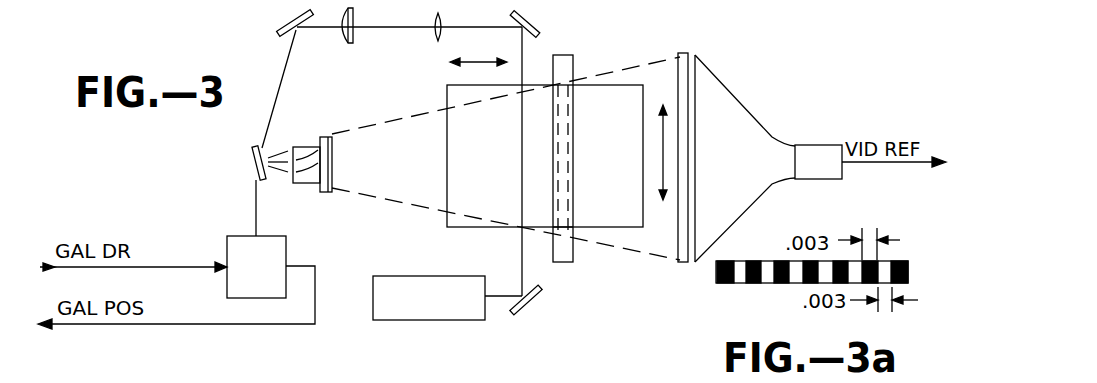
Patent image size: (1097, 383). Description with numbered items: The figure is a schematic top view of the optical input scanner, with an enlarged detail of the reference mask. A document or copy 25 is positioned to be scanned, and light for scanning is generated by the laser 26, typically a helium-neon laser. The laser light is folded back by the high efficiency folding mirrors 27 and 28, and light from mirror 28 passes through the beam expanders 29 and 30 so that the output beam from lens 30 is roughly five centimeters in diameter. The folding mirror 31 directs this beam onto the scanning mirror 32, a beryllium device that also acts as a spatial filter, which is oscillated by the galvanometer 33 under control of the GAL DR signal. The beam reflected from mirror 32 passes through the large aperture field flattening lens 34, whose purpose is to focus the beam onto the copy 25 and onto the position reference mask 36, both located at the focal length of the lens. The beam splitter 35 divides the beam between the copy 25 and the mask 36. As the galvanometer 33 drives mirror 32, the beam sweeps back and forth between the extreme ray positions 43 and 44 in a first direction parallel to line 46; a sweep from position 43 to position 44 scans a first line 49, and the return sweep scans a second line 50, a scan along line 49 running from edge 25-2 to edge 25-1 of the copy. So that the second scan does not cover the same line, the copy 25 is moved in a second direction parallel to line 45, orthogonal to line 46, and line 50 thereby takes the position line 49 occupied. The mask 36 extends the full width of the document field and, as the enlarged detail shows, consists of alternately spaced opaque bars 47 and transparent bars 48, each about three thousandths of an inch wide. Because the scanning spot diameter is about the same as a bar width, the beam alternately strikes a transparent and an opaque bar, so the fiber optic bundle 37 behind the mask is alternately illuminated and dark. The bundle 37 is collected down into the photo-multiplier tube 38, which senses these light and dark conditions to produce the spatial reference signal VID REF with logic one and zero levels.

In FIG. 3, the copy 25 is at (603, 169).
In FIG. 3, the edge of copy 25-1 is at (530, 84).
In FIG. 3, the edge of copy 25-2 is at (583, 230).
In FIG. 3, the laser 26 is at (428, 276).
In FIG. 3, the folding mirror 27 is at (532, 303).
In FIG. 3, the folding mirror 28 is at (538, 25).
In FIG. 3, the beam expander 29 is at (437, 41).
In FIG. 3, the beam expander lens 30 is at (349, 43).
In FIG. 3, the folding mirror 31 is at (278, 33).
In FIG. 3, the scanning mirror 32 is at (252, 160).
In FIG. 3, the galvanometer 33 is at (237, 236).
In FIG. 3, the field flattening lens 34 is at (306, 146).
In FIG. 3, the beam splitter 35 is at (575, 70).
In FIG. 3, the position reference mask 36 is at (686, 52).
In FIG. 3, the fiber optic bundle 37 is at (745, 100).
In FIG. 3, the photo-multiplier tube 38 is at (810, 145).
In FIG. 3, the extreme ray position 43 is at (410, 118).
In FIG. 3, the extreme ray position 44 is at (405, 205).
In FIG. 3, the line of second direction 45 is at (490, 60).
In FIG. 3, the line of first direction 46 is at (660, 150).
In FIG. 3a, the opaque bars 47 is at (795, 284).
In FIG. 3a, the transparent bars 48 is at (740, 261).
In FIG. 3, the first line 49 is at (573, 86).
In FIG. 3, the second line 50 is at (553, 86).